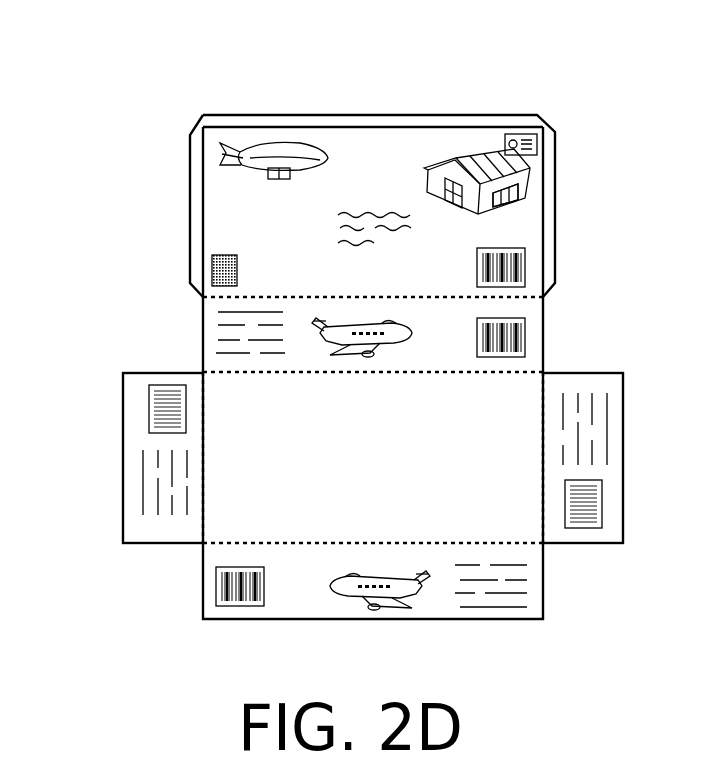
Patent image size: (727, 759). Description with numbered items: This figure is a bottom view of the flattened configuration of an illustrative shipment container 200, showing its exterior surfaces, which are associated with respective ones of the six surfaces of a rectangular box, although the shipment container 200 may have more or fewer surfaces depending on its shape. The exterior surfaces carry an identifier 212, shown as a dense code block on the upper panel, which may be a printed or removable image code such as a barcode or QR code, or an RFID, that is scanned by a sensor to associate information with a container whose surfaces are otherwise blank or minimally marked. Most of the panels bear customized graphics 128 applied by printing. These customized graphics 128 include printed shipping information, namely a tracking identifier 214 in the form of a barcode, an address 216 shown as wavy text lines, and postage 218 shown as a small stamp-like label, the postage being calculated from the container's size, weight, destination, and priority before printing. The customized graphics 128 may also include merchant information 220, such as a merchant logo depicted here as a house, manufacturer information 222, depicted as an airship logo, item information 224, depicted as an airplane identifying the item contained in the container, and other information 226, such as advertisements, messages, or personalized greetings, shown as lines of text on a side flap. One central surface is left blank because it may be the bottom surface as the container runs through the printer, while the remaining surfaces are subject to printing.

The shipment container 200 is at (122, 205).
The identifier 212 is at (222, 256).
The manufacturer information 222 is at (313, 150).
The address 216 is at (390, 205).
The customized graphics 128 is at (470, 150).
The postage 218 is at (537, 146).
The merchant information 220 is at (527, 190).
The tracking identifier 214 is at (524, 268).
The item information 224 is at (400, 327).
The other information 226 is at (598, 436).